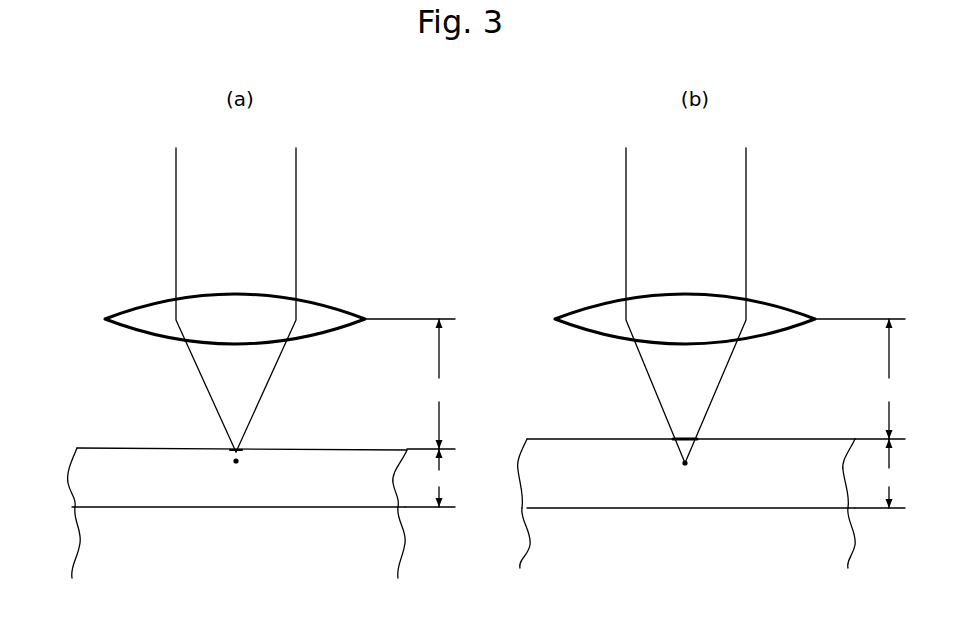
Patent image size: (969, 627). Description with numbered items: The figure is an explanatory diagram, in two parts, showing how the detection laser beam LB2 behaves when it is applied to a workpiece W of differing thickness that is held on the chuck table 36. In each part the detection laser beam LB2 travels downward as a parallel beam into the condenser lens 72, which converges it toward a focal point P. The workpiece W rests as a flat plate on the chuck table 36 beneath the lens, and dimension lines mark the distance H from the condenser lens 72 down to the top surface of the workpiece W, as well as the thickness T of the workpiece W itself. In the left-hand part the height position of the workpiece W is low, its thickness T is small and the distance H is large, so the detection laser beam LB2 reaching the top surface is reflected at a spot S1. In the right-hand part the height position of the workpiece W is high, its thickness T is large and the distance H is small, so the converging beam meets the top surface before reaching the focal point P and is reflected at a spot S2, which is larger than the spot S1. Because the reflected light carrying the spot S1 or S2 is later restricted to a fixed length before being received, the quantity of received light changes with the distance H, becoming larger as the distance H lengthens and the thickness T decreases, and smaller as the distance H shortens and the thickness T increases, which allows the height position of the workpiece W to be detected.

The detection laser beam LB2 is at (298, 169).
The condenser lens 72 is at (133, 306).
The workpiece W is at (82, 478).
The chuck table 36 is at (83, 532).
The focal point P is at (236, 461).
The spot S1 is at (236, 450).
The spot S2 is at (683, 438).
The distance from the condenser lens to the top surface of the workpiece H is at (664, 384).
The thickness of the workpiece T is at (655, 473).